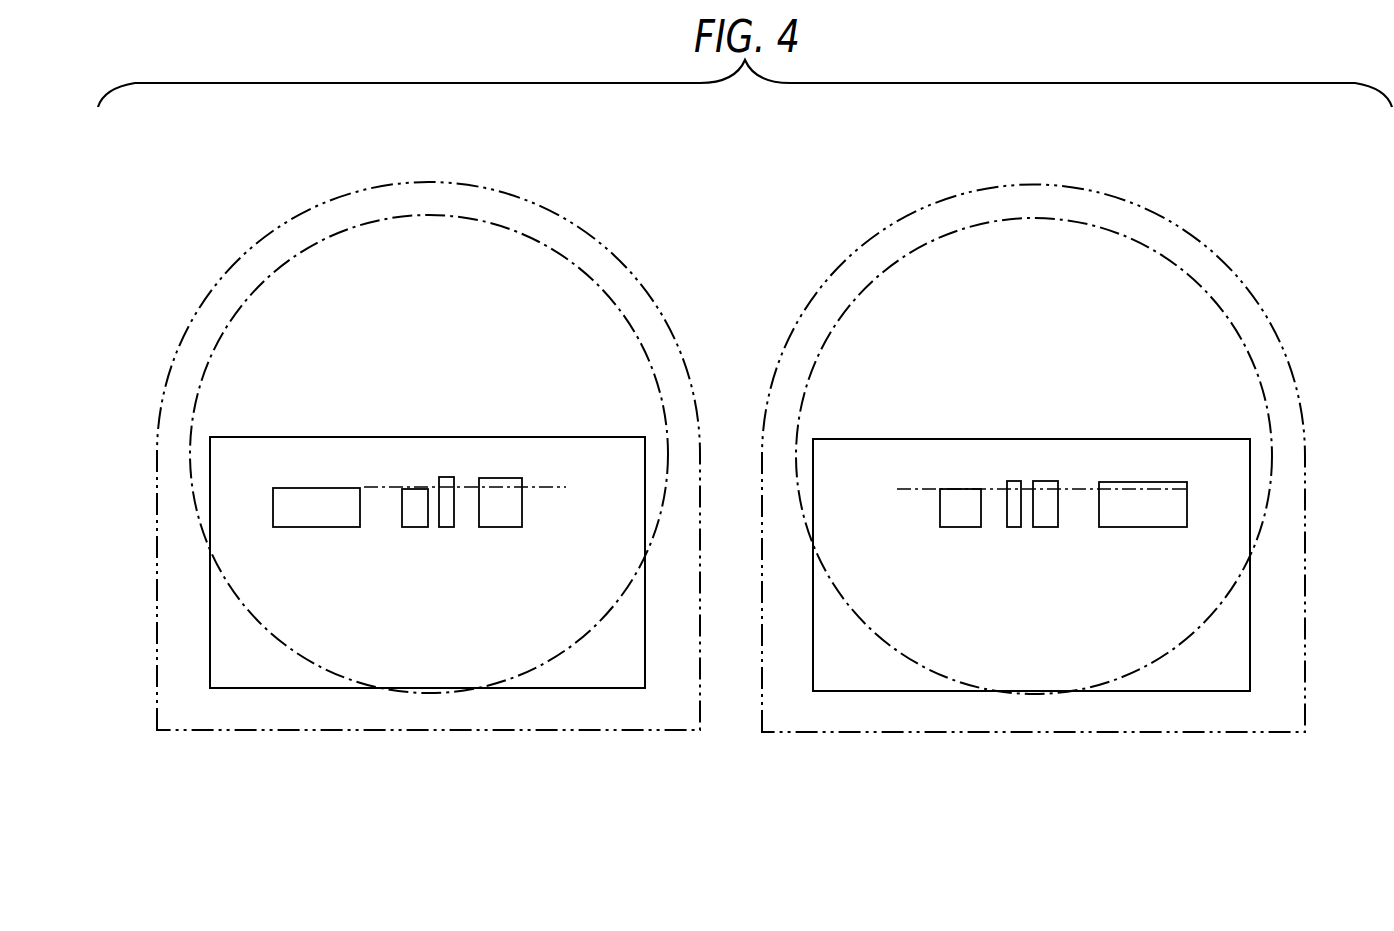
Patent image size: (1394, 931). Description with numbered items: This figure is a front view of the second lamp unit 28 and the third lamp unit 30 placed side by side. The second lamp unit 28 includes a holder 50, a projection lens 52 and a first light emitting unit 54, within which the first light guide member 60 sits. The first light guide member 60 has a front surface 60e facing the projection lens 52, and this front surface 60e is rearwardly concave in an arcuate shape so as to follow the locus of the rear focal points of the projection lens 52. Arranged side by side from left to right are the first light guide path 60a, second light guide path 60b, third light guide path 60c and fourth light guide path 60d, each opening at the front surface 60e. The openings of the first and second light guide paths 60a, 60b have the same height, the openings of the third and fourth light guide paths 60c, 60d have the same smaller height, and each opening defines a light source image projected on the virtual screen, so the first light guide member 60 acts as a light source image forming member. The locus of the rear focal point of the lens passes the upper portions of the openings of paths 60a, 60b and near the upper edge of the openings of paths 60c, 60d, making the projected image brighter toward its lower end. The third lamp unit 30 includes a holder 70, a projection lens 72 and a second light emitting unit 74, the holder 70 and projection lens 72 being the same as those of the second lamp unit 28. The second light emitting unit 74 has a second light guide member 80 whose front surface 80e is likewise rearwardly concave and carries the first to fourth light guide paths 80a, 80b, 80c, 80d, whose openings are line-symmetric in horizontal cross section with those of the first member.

The second lamp unit 28 is at (672, 193).
The third lamp unit 30 is at (1279, 196).
The holder 50 is at (590, 235).
The projection lens 52 is at (465, 695).
The first light emitting unit 54 is at (468, 393).
The first light guide member 60 is at (537, 437).
The first light guide path 60a is at (520, 513).
The second light guide path 60b is at (453, 511).
The third light guide path 60c is at (427, 513).
The fourth light guide path 60d is at (359, 511).
The front surface 60e is at (257, 590).
The holder 70 is at (1198, 240).
The projection lens 72 is at (1063, 697).
The second light emitting unit 74 is at (1068, 396).
The second light guide member 80 is at (1141, 440).
The first light guide path 80a is at (1184, 511).
The second light guide path 80b is at (1055, 512).
The third light guide path 80c is at (1019, 513).
The fourth light guide path 80d is at (977, 512).
The front surface 80e is at (1208, 590).